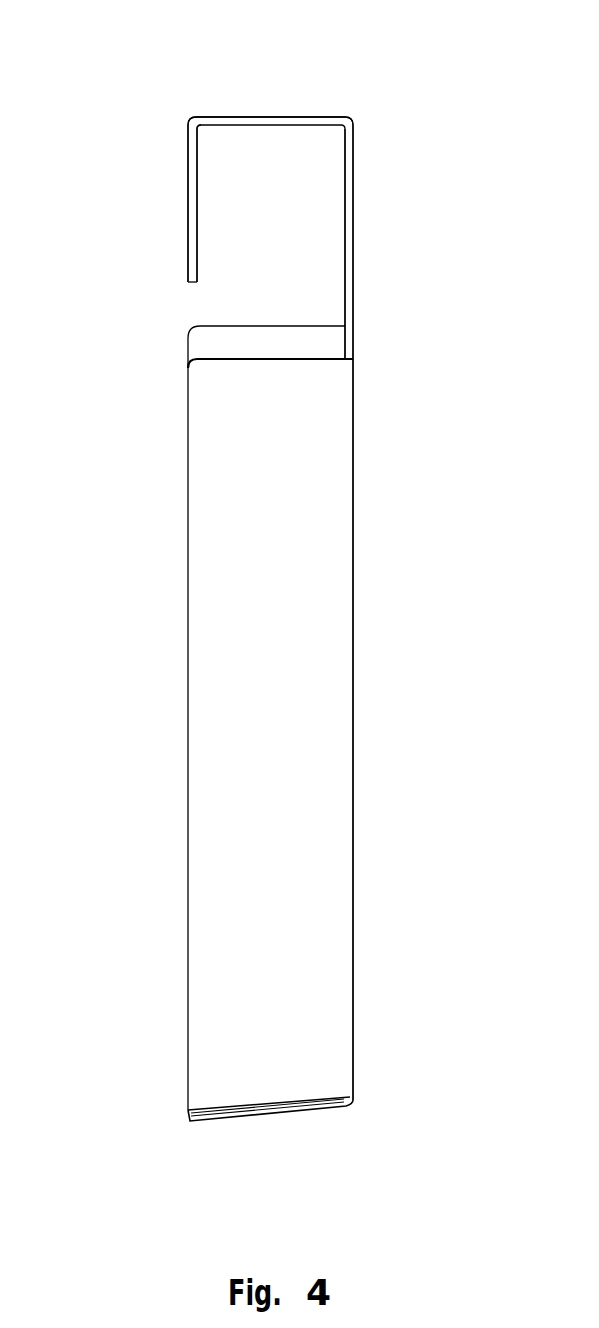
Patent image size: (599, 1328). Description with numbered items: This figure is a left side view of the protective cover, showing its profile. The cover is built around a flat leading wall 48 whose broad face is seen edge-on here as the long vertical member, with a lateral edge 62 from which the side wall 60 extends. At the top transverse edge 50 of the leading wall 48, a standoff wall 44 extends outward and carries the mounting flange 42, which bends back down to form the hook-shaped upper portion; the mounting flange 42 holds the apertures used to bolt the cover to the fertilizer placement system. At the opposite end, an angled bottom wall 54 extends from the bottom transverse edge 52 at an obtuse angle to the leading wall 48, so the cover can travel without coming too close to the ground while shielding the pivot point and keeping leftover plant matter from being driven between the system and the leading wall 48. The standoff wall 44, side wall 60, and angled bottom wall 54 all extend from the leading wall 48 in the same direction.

The mounting flange 42 is at (188, 207).
The standoff wall 44 is at (269, 117).
The leading wall 48 is at (353, 274).
The top transverse edge 50 is at (348, 118).
The bottom transverse edge 52 is at (352, 1103).
The angled bottom wall 54 is at (260, 1117).
The side wall 60 is at (295, 681).
The lateral edge 62 is at (348, 710).